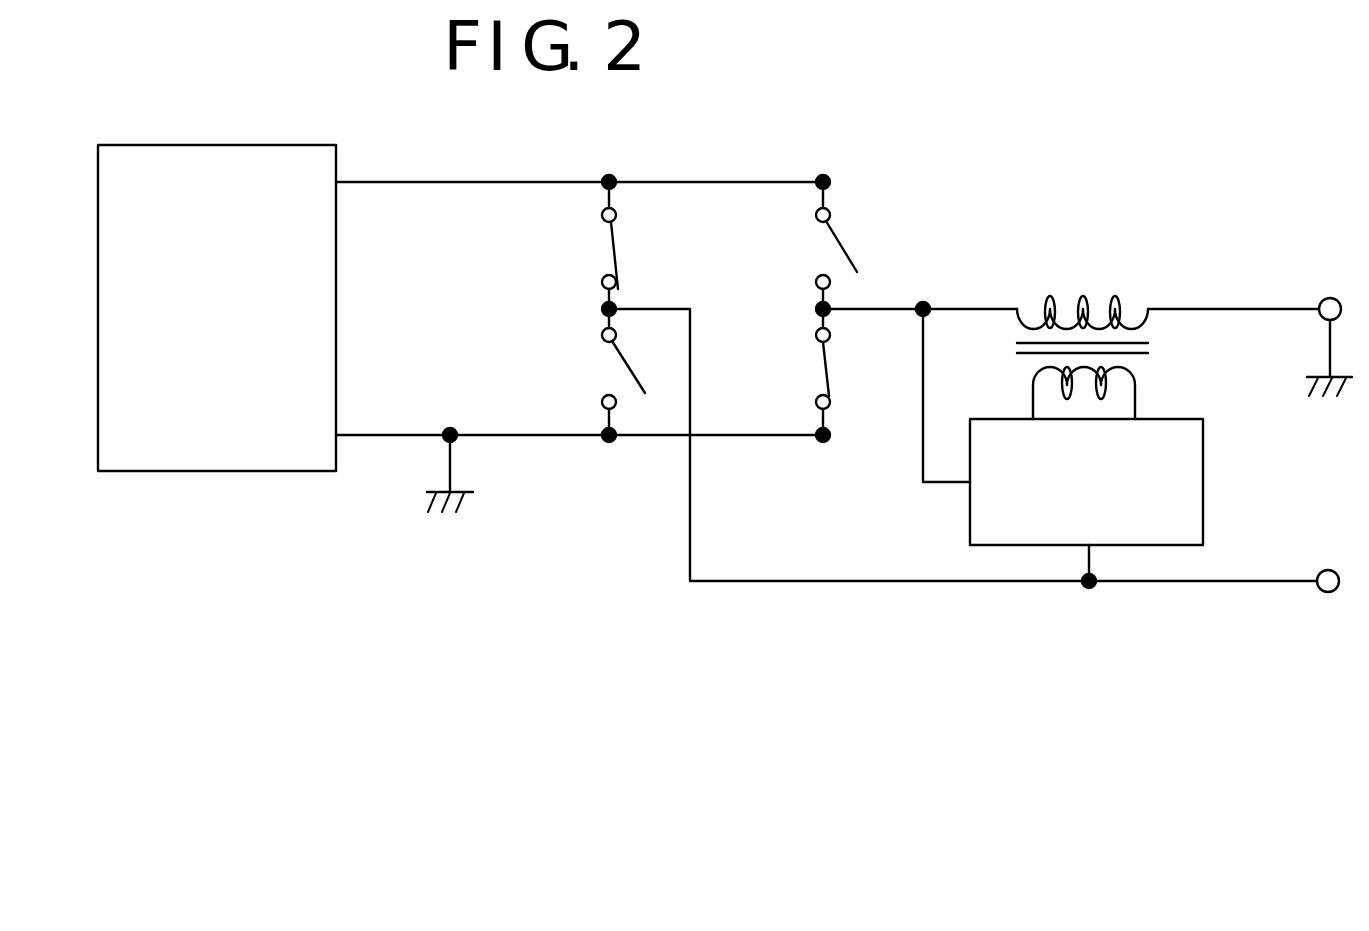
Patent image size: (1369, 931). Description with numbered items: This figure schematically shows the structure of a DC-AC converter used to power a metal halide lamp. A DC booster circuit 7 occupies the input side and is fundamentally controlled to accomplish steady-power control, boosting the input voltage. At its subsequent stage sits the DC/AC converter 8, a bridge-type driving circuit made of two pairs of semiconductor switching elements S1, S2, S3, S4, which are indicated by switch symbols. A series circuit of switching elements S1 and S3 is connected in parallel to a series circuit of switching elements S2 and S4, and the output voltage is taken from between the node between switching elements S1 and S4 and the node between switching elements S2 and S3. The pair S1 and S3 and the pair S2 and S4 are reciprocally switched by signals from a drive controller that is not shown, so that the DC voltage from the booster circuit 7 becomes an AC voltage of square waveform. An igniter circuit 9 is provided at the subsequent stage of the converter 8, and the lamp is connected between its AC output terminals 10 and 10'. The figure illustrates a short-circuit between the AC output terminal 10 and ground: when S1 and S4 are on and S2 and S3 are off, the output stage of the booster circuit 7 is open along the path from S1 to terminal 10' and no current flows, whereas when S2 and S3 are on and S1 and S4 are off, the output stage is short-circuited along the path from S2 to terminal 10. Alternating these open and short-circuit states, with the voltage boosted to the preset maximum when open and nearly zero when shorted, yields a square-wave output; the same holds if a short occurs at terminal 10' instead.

The DC booster circuit 7 is at (203, 144).
The DC/AC converter 8 is at (619, 293).
The switching element S1 is at (585, 245).
The switching element S2 is at (859, 245).
The switching element S3 is at (599, 372).
The switching element S4 is at (846, 372).
The igniter circuit 9 is at (1203, 466).
The AC output terminal 10 is at (1250, 306).
The AC output terminal 10' is at (1335, 624).